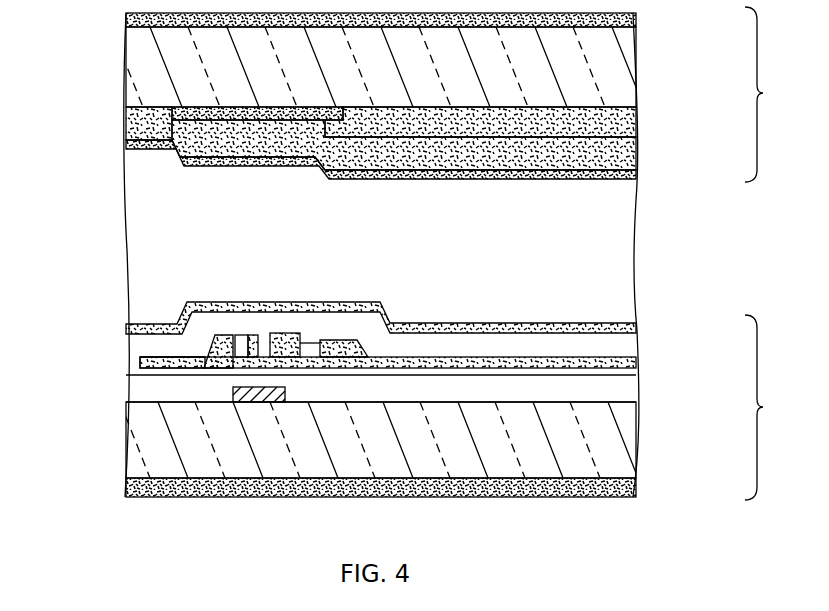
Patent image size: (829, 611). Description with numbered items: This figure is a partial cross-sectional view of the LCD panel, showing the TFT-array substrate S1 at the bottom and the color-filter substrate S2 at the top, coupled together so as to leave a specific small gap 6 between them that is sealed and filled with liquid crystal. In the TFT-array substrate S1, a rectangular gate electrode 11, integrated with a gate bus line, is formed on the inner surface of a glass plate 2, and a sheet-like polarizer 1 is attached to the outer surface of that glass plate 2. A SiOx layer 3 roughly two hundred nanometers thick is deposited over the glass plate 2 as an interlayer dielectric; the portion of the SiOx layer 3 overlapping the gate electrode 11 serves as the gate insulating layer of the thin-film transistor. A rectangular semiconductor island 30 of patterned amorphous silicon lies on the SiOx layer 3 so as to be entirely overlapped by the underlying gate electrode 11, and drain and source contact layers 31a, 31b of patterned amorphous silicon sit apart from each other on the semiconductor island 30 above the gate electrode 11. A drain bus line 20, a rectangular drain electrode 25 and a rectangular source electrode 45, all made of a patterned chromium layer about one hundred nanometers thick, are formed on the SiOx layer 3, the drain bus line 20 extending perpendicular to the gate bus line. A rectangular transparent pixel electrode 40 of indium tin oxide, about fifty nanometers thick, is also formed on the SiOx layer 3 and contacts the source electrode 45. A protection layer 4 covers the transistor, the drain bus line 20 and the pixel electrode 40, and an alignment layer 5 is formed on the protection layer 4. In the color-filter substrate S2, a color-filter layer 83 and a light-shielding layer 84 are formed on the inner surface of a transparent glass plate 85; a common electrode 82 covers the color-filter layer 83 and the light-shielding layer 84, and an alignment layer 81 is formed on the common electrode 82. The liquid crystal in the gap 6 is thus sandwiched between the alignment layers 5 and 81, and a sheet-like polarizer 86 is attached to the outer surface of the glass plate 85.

The polarizer 1 is at (633, 488).
The glass plate 2 is at (633, 445).
The SiOx layer 3 is at (628, 390).
The protection layer 4 is at (628, 348).
The alignment layer 5 is at (633, 327).
The gap 6 is at (622, 273).
The gate electrode 11 is at (233, 394).
The drain bus line 20 is at (140, 362).
The drain electrode 25 is at (183, 360).
The semiconductor island 30 is at (260, 357).
The drain contact layer 31a is at (243, 352).
The source contact layer 31b is at (272, 333).
The pixel electrode 40 is at (633, 366).
The source electrode 45 is at (305, 350).
The alignment layer 81 is at (630, 178).
The common electrode 82 is at (625, 155).
The color-filter layer 83 is at (633, 122).
The light-shielding layer 84 is at (180, 117).
The glass plate 85 is at (623, 68).
The polarizer 86 is at (633, 15).
The TFT-array substrate S1 is at (775, 407).
The color-filter substrate S2 is at (774, 94).